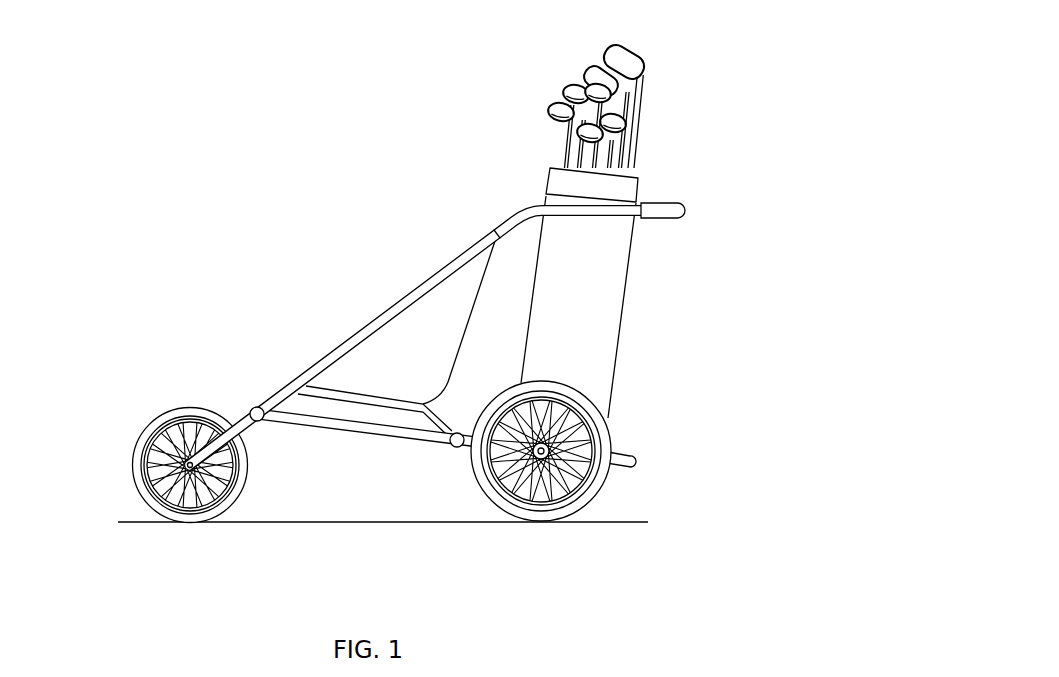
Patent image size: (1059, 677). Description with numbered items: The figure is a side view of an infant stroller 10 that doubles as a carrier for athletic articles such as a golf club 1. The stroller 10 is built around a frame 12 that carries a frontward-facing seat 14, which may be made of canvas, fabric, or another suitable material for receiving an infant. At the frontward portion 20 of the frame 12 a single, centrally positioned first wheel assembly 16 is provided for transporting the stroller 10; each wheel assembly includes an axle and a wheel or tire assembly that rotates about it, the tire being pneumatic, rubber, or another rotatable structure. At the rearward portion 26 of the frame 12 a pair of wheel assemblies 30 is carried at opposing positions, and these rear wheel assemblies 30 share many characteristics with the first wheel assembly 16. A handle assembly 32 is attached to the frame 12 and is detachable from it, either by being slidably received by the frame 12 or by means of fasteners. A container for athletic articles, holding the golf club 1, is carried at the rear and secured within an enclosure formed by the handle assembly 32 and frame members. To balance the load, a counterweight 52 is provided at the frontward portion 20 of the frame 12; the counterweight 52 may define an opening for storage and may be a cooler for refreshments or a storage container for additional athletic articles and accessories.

The golf club 1 is at (644, 63).
The infant stroller 10 is at (399, 393).
The frame 12 is at (334, 440).
The frontward-facing seat 14 is at (510, 308).
The first wheel assembly 16 is at (135, 465).
The frontward portion 20 is at (243, 397).
The rearward portion 26 is at (622, 482).
The wheel assemblies 30 is at (505, 497).
The handle assembly 32 is at (681, 229).
The counterweight 52 is at (317, 407).